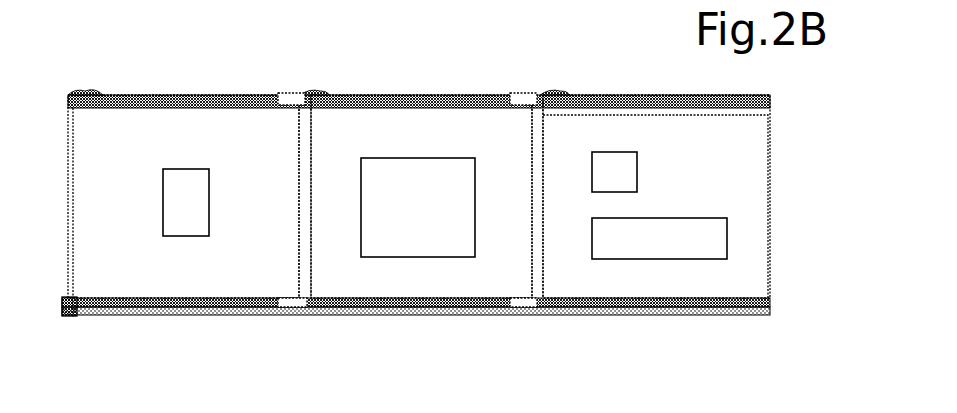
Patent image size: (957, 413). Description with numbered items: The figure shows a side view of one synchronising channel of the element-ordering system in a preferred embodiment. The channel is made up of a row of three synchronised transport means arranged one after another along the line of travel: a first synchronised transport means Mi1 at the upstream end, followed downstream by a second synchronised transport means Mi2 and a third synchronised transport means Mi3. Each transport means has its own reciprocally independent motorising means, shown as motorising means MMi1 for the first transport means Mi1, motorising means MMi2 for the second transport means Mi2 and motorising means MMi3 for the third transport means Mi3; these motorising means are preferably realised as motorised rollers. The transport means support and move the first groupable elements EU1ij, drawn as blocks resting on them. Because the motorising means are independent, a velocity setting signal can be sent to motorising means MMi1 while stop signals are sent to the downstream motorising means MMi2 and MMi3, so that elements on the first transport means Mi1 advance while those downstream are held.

The first groupable elements EU1ij is at (411, 158).
The motorising means MMi1 is at (73, 316).
The first synchronised transport means Mi1 is at (152, 268).
The motorising means MMi2 is at (286, 316).
The synchronised transport means Mi2 is at (413, 270).
The motorising means MMi3 is at (515, 316).
The synchronised transport means Mi3 is at (633, 268).